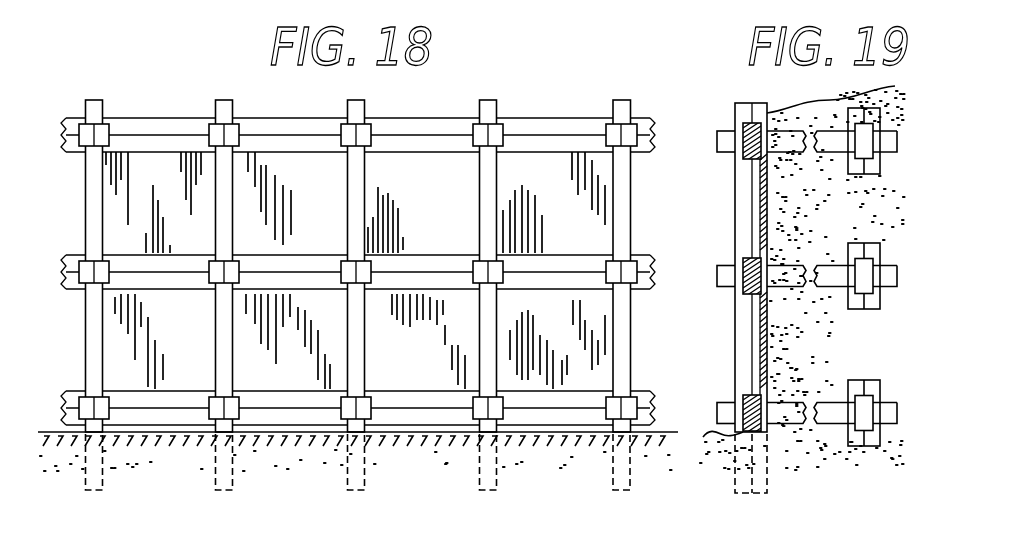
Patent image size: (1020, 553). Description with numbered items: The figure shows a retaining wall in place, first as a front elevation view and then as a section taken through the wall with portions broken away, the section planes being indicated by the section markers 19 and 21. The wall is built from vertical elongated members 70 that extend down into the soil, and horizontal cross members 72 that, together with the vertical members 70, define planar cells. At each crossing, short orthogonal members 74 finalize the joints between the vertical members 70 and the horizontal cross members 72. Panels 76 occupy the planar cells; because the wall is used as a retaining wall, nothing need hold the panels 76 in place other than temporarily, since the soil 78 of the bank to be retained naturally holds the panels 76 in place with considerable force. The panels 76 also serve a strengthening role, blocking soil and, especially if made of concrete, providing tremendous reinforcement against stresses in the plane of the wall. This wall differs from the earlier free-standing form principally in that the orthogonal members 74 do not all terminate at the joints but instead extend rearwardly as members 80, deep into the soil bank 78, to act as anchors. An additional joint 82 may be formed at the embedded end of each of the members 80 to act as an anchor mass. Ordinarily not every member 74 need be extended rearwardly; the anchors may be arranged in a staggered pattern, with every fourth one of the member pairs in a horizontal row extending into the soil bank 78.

In FIG. 18, the vertical elongated member 70 is at (498, 200).
In FIG. 18, the horizontal cross member 72 is at (430, 118).
In FIG. 18, the short member 74 is at (503, 126).
In FIG. 18, the panel 76 is at (444, 223).
In FIG. 19, the soil 78 is at (841, 231).
In FIG. 19, the rearwardly extending member 80 is at (833, 288).
In FIG. 19, the additional joint 82 is at (868, 247).
In FIG. 18, the section line 19- 19 is at (642, 513).
In FIG. 19, the section line 21- 21 is at (767, 513).